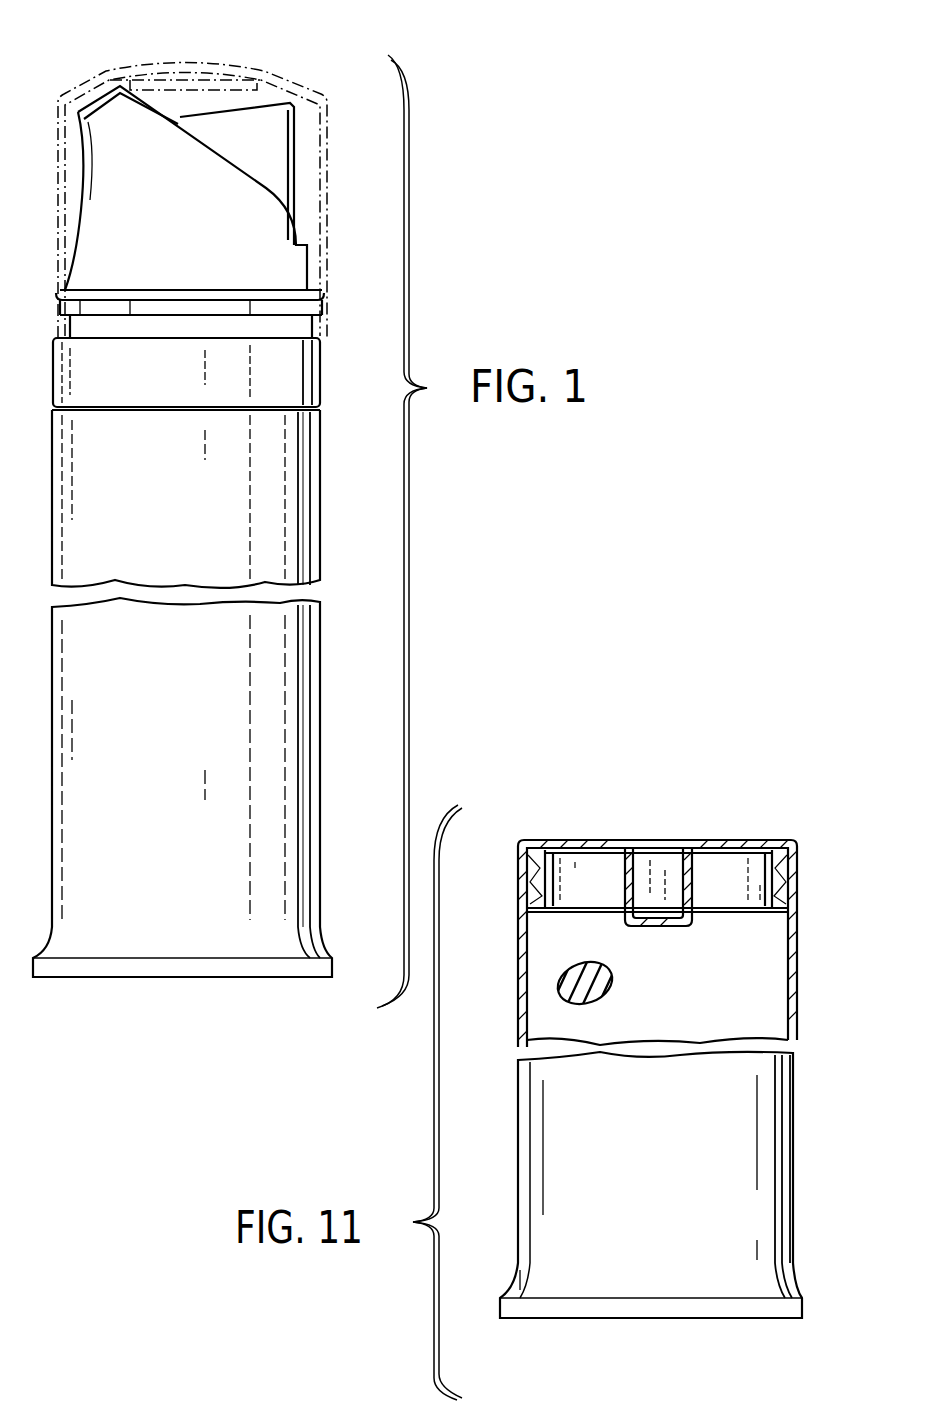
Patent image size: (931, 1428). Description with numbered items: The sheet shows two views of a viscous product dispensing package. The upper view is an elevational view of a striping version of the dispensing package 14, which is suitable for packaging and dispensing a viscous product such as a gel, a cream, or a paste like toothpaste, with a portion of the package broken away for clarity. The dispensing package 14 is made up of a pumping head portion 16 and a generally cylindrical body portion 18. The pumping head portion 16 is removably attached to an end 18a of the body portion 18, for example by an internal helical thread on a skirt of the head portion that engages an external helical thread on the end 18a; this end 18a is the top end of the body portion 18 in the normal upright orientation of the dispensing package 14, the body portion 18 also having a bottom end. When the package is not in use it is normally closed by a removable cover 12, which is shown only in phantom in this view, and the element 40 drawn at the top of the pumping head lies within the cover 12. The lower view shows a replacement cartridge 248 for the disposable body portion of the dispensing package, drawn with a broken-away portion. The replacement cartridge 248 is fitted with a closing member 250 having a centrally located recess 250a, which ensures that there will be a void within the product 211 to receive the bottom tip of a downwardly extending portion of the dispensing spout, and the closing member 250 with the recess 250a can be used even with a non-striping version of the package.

In FIG. 1, the removable cover 12 is at (323, 252).
In FIG. 1, the pump head 40 is at (257, 104).
In FIG. 1, the pumping head portion 16 is at (323, 392).
In FIG. 1, the dispensing package 14 is at (323, 515).
In FIG. 1, the body portion 18 is at (322, 566).
In FIG. 1, the end of the body portion 18a is at (322, 471).
In FIG. 11, the closing member 250 is at (795, 846).
In FIG. 11, the recess 250a is at (645, 870).
In FIG. 11, the product 211 is at (556, 990).
In FIG. 11, the replacement cartridge 248 is at (513, 1097).